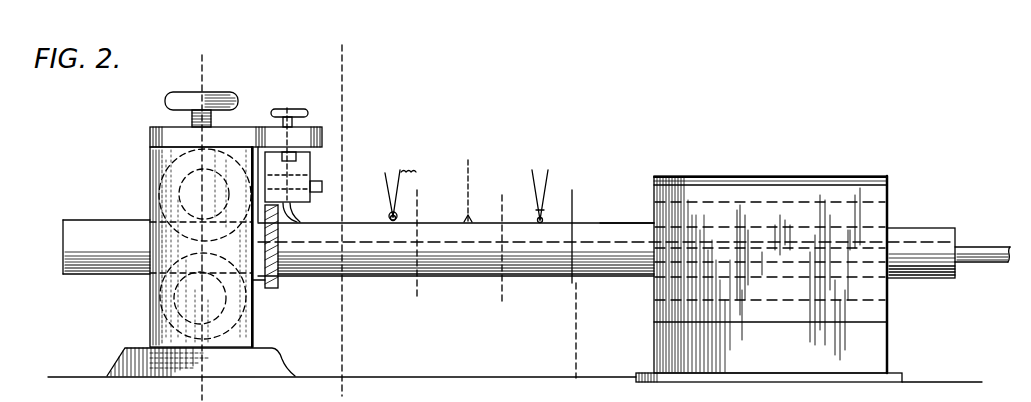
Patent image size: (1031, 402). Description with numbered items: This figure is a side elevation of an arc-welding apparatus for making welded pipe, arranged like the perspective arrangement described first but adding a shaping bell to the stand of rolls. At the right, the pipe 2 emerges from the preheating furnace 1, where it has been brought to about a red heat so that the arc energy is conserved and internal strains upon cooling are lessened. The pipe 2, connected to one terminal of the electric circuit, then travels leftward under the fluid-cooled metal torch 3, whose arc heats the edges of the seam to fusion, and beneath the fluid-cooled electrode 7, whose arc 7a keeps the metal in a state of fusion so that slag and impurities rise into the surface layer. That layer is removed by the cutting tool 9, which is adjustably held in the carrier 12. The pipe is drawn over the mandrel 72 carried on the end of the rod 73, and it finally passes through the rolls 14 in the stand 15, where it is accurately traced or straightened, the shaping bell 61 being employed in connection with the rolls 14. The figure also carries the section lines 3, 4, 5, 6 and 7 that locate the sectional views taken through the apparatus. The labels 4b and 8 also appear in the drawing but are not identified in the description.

The preheating furnace 1 is at (660, 342).
The pipe 2 is at (612, 227).
The fluid-cooled metal torch 3 is at (306, 45).
The section line 4— 4 is at (188, 70).
The guide rod 4b is at (470, 182).
The section line 5— 5 is at (563, 212).
The section line 6— 6 is at (493, 212).
The fluid-cooled electrode 7 is at (385, 193).
The arc 7a is at (388, 217).
The outlet box 8 is at (942, 278).
The cutting tool 9 is at (292, 212).
The carrier 12 is at (305, 162).
The rolls 14 is at (150, 178).
The stand 15 is at (150, 325).
The shaping bell 61 is at (272, 286).
The mandrel 72 is at (509, 248).
The rod 73 is at (985, 262).